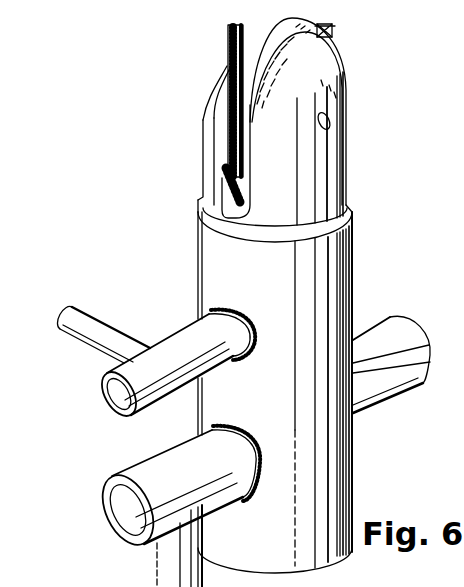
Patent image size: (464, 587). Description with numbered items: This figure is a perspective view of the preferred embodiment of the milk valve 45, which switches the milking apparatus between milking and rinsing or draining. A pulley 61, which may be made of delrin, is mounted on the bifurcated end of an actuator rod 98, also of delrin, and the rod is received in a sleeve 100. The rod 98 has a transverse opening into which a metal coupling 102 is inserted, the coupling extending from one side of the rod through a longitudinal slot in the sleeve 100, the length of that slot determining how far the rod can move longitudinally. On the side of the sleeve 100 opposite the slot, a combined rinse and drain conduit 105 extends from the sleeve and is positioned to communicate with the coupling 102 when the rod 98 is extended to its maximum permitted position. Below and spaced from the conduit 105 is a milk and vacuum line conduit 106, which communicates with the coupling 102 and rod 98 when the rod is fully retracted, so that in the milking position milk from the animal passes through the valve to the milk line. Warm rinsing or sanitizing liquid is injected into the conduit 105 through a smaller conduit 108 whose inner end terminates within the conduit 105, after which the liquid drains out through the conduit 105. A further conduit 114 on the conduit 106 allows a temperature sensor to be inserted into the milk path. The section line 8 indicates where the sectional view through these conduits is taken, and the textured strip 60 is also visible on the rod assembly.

The section line 8 is at (55, 313).
The milk valve 45 is at (200, 210).
The textured strip 60 is at (228, 32).
The pulley 61 is at (222, 110).
The actuator rod 98 is at (340, 158).
The sleeve 100 is at (407, 359).
The coupling 102 is at (398, 389).
The combined rinse and drain conduit 105 is at (107, 381).
The milk and vacuum line conduit 106 is at (157, 462).
The conduit 108 is at (97, 325).
The conduit 114 is at (160, 557).